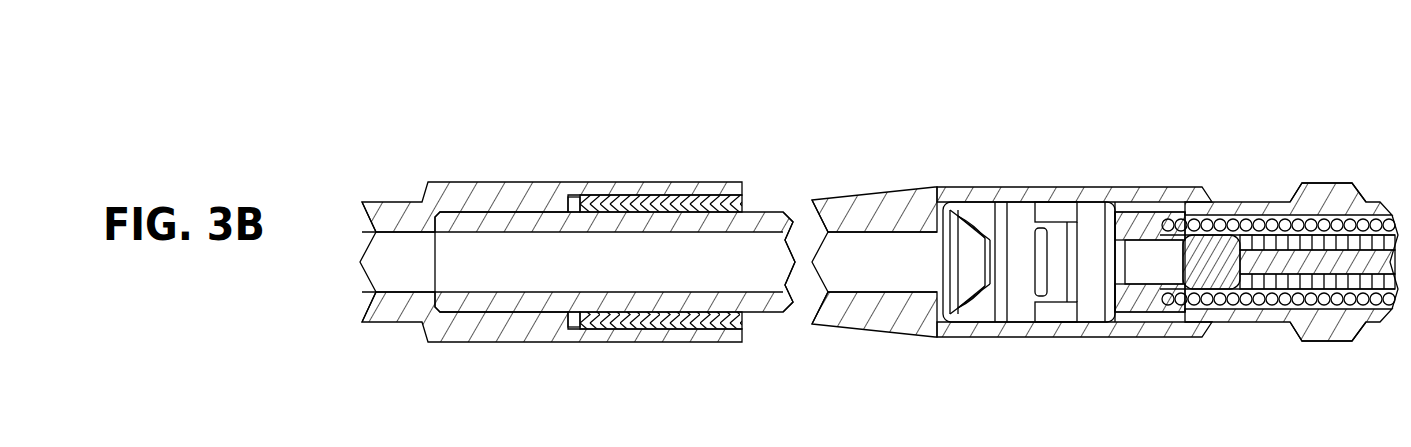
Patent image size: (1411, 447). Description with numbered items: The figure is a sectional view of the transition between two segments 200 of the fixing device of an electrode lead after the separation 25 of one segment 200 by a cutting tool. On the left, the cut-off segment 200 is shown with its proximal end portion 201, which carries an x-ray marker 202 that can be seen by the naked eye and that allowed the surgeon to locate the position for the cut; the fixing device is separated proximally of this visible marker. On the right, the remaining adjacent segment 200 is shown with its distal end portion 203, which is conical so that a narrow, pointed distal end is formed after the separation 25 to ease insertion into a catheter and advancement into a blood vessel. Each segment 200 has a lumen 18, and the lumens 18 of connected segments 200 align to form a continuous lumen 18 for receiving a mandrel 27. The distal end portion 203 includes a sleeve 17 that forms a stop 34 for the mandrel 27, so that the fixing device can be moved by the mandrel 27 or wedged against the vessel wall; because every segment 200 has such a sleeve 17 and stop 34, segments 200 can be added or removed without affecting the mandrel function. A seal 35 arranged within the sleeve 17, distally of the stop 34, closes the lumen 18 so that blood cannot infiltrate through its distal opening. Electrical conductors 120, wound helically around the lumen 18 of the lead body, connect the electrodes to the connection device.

The segment 200 is at (508, 160).
The proximal end portion 201 is at (686, 182).
The x-ray marker 202 is at (597, 195).
The lumen 18 is at (752, 258).
The separation 25 is at (797, 222).
The distal end portion 203 is at (886, 192).
The sleeve 17 is at (1100, 196).
The seal 35 is at (1058, 237).
The stop 34 is at (1143, 227).
The electrical conductor 120 is at (1262, 215).
The mandrel 27 is at (1328, 200).